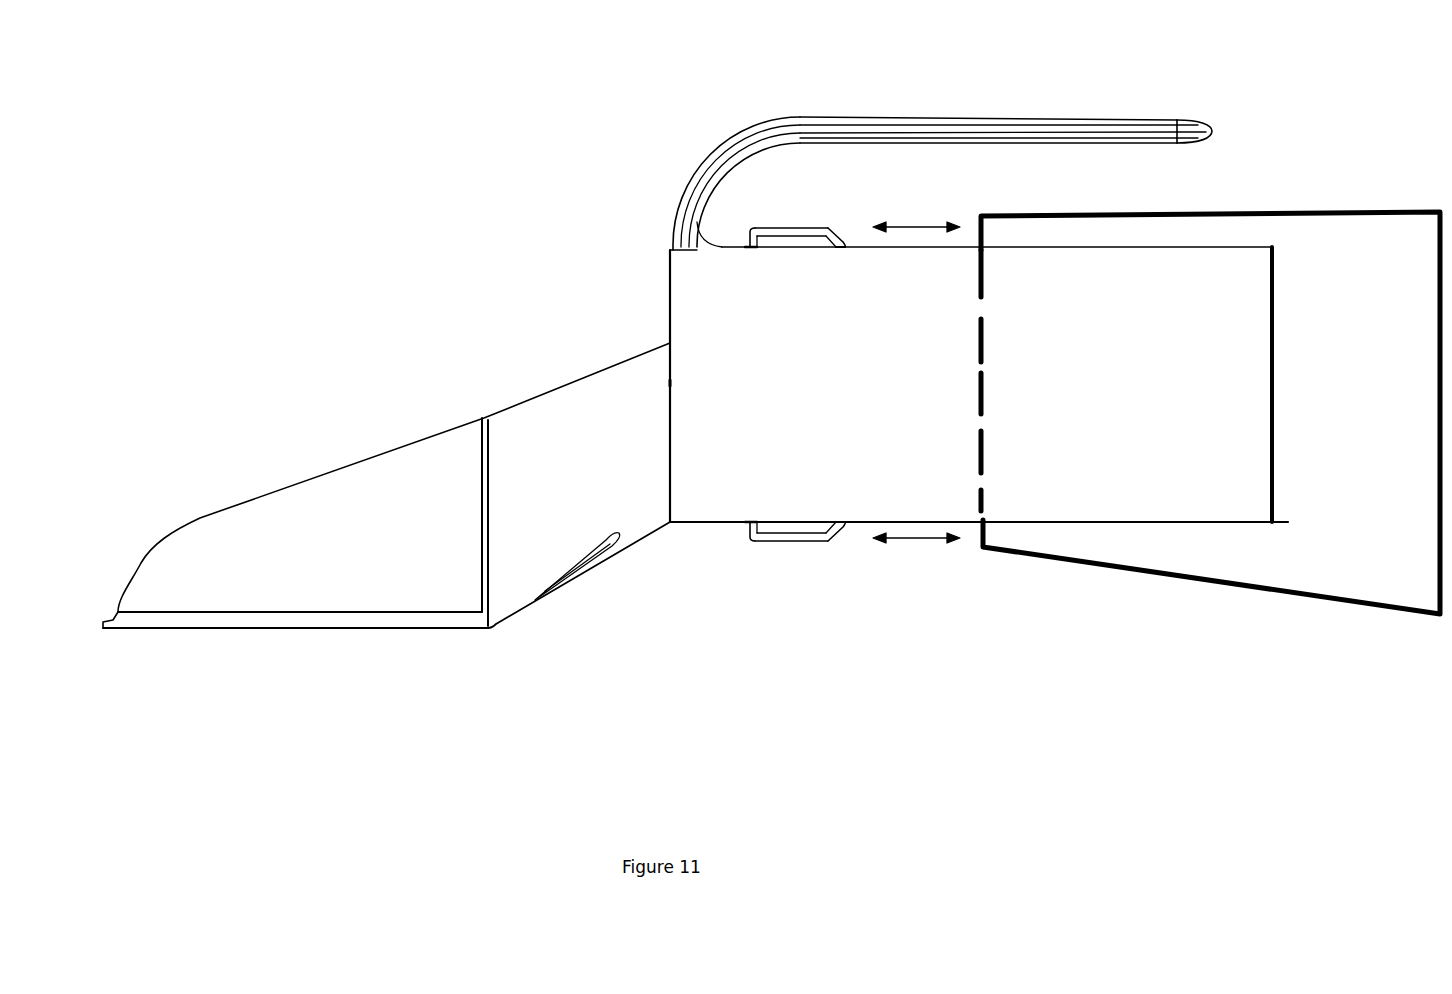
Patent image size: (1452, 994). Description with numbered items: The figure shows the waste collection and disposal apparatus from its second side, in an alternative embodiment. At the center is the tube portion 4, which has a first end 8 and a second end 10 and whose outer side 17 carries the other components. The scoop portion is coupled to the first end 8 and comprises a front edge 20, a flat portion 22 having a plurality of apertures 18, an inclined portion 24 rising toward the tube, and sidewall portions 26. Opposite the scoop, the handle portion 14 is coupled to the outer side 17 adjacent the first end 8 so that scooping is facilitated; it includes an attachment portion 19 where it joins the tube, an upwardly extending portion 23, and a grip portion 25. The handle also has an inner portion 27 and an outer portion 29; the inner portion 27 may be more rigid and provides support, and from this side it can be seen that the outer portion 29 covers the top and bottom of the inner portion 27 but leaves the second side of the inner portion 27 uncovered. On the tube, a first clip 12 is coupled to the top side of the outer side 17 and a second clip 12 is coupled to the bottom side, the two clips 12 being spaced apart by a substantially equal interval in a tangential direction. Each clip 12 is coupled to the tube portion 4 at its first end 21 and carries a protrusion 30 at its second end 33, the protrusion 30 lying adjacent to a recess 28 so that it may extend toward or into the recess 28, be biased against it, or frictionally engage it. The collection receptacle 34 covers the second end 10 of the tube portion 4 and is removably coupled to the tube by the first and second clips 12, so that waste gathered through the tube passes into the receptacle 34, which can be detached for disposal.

The tube portion 4 is at (685, 472).
The first end 8 is at (670, 297).
The second end 10 is at (1272, 428).
The clip 12 is at (798, 398).
The handle portion 14 is at (910, 127).
The outer side 17 is at (703, 338).
The apertures 18 is at (577, 587).
The attachment portion 19 is at (678, 230).
The front edge 20 is at (105, 628).
The first end 21 is at (748, 222).
The flat portion 22 is at (310, 622).
The upwardly extending portion 23 is at (715, 157).
The inclined portion 24 is at (512, 430).
The grip portion 25 is at (1010, 108).
The sidewall portions 26 is at (280, 513).
The inner portion 27 is at (1135, 130).
The recess 28 is at (842, 252).
The outer portion 29 is at (1100, 143).
The protrusion 30 is at (843, 232).
The second end 33 is at (836, 222).
The collection receptacle 34 is at (1318, 210).